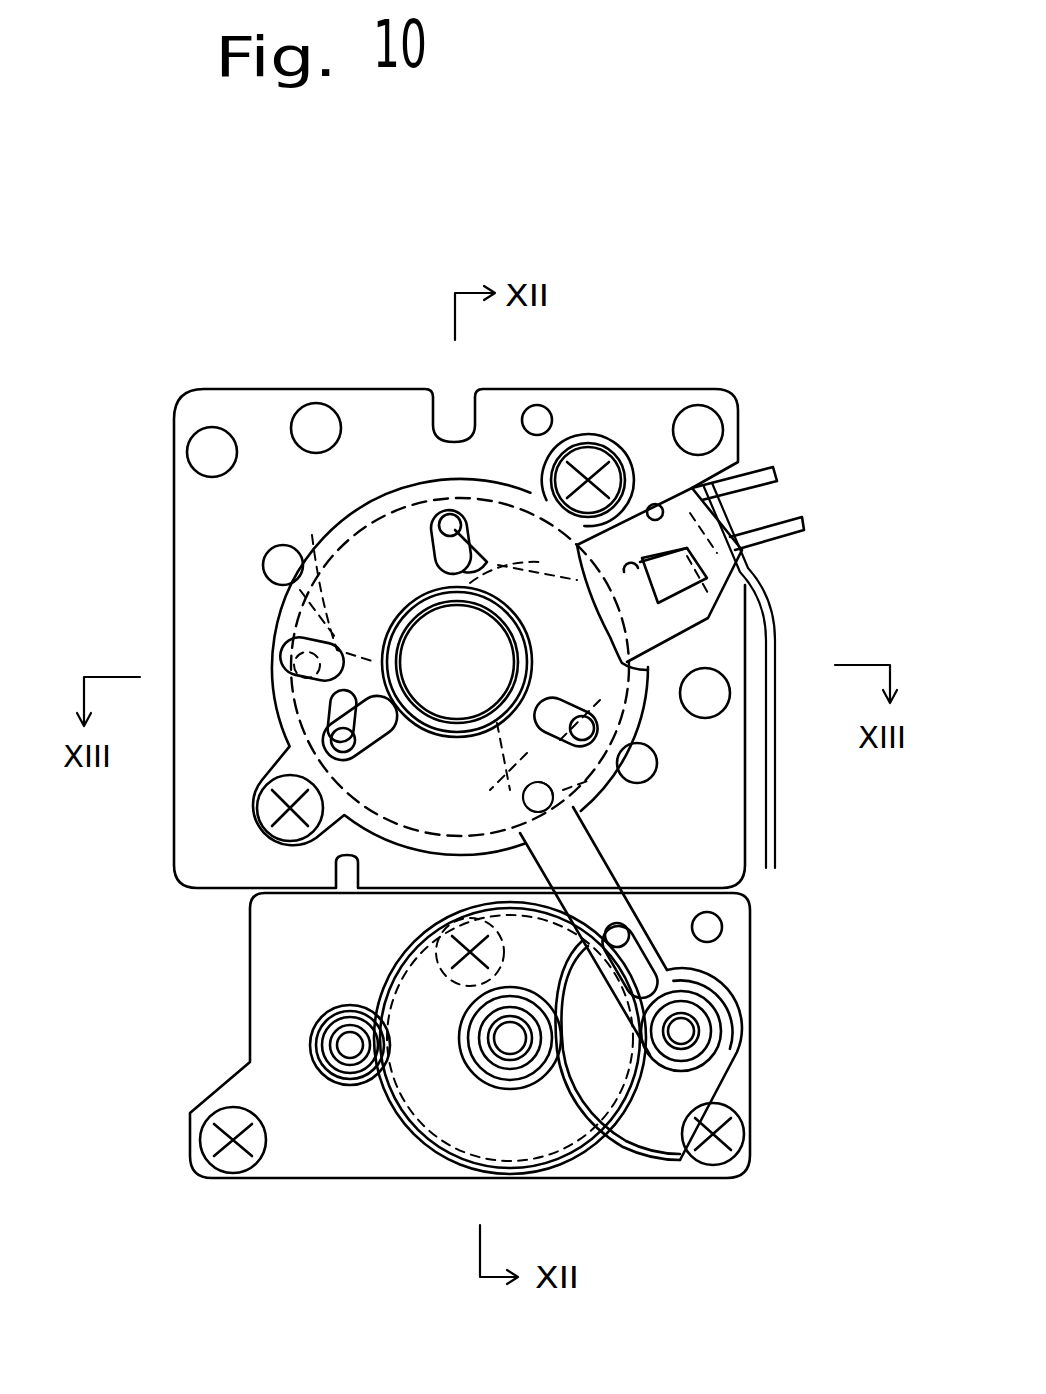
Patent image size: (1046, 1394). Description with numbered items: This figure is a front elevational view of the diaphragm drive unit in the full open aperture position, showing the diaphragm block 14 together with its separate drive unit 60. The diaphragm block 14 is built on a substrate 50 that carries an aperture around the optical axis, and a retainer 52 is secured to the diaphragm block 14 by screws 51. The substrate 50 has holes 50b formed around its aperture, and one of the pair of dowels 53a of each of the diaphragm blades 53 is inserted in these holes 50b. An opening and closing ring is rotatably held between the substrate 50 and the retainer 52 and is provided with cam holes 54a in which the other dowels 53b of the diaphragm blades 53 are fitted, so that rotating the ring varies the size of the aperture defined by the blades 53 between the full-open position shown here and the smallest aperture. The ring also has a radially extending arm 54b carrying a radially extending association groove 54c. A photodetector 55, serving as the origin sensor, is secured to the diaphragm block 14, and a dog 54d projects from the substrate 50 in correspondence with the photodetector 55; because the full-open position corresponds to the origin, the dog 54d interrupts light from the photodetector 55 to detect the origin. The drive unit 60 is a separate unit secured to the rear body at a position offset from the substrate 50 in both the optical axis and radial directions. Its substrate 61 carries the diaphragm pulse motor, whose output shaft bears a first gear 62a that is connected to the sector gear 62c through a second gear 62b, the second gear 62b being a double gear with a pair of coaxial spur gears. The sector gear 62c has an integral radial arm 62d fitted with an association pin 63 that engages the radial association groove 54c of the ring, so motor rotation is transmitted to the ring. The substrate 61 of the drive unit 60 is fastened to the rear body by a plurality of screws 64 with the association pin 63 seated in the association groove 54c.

The diaphragm block 14 is at (138, 384).
The substrate 50 is at (205, 570).
The holes 50b is at (278, 666).
The screws 51 is at (588, 440).
The retainer 52 is at (338, 562).
The diaphragm blades 53 is at (330, 545).
The dowels 53a is at (625, 828).
The dowels 53b is at (440, 510).
The cam holes 54a is at (466, 545).
The arm 54b is at (775, 866).
The association groove 54c is at (668, 962).
The dog 54d is at (682, 611).
The photodetector 55 is at (675, 530).
The drive unit 60 is at (176, 1200).
The substrate 61 is at (338, 1157).
The first gear 62a is at (337, 1050).
The second gear 62b is at (540, 1137).
The sector gear 62c is at (672, 1092).
The radial arm 62d is at (593, 987).
The association pin 63 is at (622, 930).
The screws 64 is at (205, 1138).